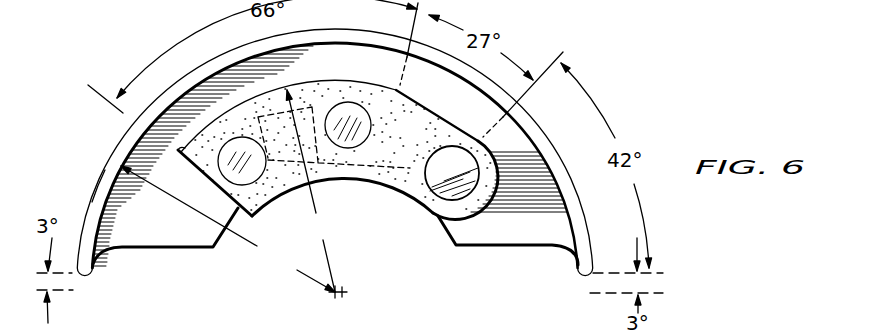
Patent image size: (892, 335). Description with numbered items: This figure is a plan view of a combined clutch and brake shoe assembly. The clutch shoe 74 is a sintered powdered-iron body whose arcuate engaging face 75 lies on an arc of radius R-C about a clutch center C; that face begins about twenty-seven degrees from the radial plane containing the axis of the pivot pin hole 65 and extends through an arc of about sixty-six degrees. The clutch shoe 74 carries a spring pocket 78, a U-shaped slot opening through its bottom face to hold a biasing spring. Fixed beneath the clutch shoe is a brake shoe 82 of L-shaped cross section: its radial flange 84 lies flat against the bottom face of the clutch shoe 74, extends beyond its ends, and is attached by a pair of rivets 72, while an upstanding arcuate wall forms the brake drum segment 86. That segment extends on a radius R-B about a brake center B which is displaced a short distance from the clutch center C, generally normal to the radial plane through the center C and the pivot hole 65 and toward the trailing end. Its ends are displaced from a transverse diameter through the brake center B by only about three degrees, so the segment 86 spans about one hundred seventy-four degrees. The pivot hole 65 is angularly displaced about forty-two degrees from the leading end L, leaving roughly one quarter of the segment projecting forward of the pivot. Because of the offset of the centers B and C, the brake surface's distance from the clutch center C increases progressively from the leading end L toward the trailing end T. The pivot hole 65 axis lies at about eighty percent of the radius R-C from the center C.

The pivot pin hole 65 is at (455, 160).
The rivets 72 is at (346, 111).
The clutch shoe 74 is at (407, 167).
The arcuate drum-engaging contact surface 75 is at (347, 80).
The spring pocket 78 is at (320, 182).
The brake shoe 82 is at (500, 250).
The radial flange 84 is at (557, 229).
The brake drum segment 86 is at (548, 158).
The trailing end T is at (92, 202).
The leading end L is at (588, 216).
The brake center B is at (333, 294).
The clutch center C is at (345, 296).
The brake radius R-B is at (228, 229).
The clutch face radius R-C is at (315, 191).